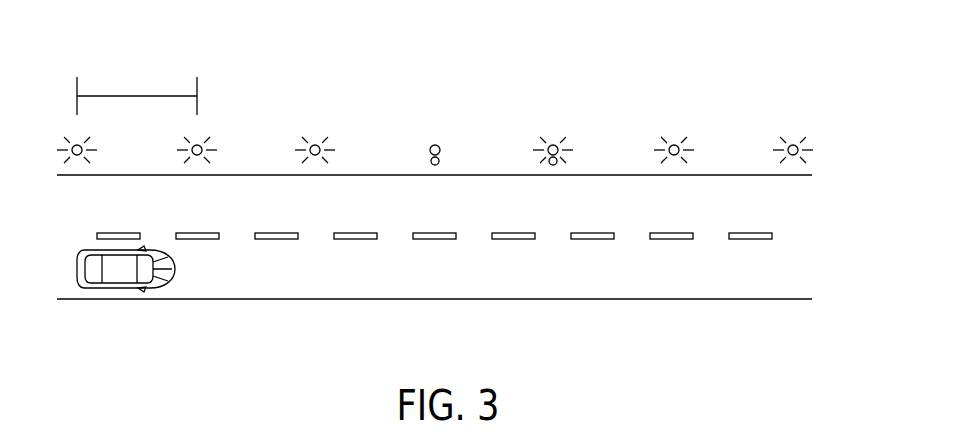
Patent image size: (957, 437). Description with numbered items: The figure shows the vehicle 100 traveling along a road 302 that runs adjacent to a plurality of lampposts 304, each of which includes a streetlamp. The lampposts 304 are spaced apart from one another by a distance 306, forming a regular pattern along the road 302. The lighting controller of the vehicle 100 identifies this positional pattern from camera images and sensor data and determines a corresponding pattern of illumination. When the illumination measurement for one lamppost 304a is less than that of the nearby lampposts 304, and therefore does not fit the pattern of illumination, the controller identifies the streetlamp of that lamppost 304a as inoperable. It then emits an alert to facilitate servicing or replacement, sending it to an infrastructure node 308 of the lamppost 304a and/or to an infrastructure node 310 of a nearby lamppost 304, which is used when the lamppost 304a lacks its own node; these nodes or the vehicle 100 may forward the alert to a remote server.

The vehicle 100 is at (120, 288).
The road 302 is at (237, 300).
The lampposts 304 is at (822, 150).
The lamppost 304a is at (436, 145).
The distance 306 is at (138, 95).
The infrastructure node 308 is at (440, 160).
The infrastructure node 310 is at (559, 161).